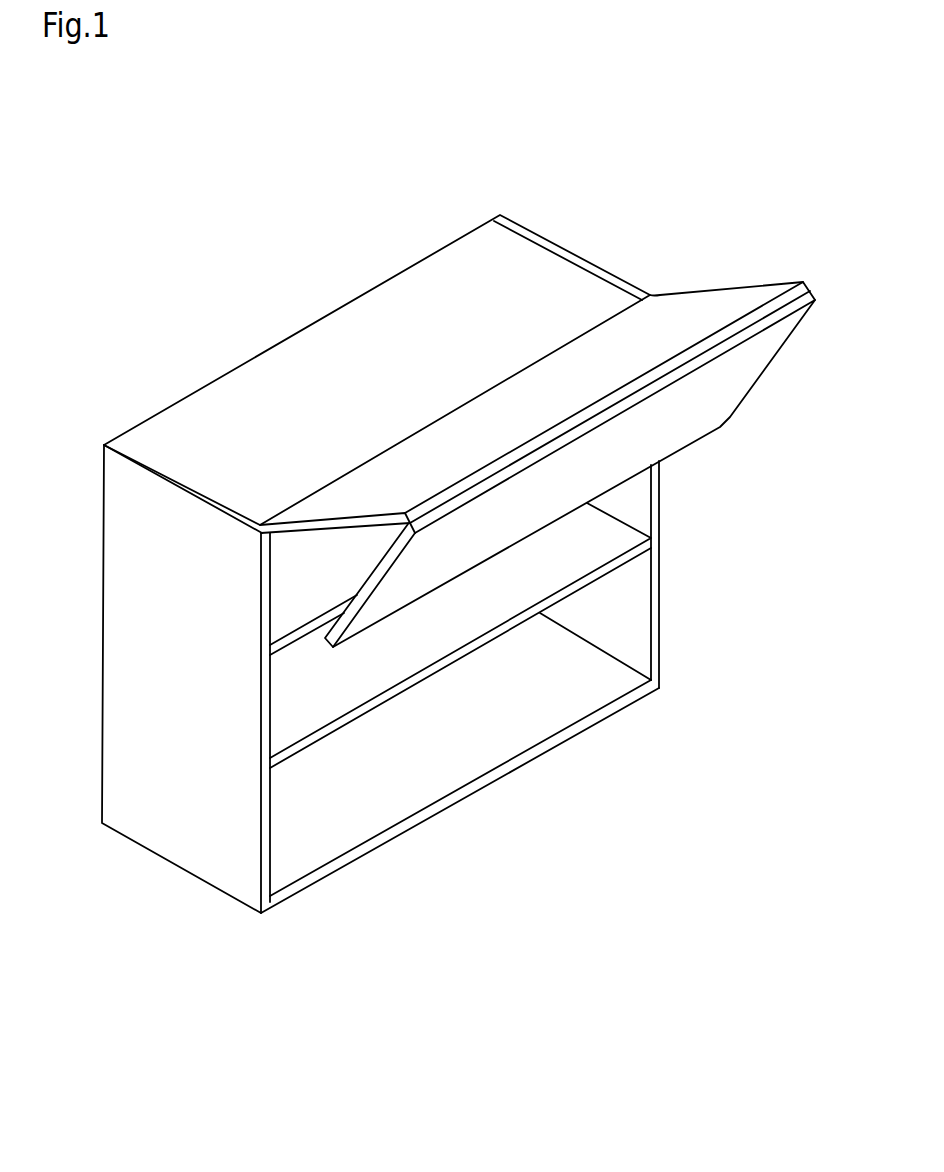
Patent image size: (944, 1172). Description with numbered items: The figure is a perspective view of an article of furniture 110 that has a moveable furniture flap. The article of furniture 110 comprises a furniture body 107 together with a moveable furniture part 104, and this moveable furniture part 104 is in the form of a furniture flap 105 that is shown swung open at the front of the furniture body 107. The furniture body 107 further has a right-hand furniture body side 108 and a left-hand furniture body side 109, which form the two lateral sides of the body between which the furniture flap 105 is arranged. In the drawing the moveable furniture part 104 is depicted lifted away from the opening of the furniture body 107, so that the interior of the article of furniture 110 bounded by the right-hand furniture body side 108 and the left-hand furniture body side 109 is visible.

The article of furniture 110 is at (580, 200).
The furniture body 107 is at (318, 358).
The left-hand furniture body side 109 is at (220, 852).
The right-hand furniture body side 108 is at (633, 508).
The moveable furniture part 104 is at (692, 307).
The furniture flap 105 is at (692, 307).